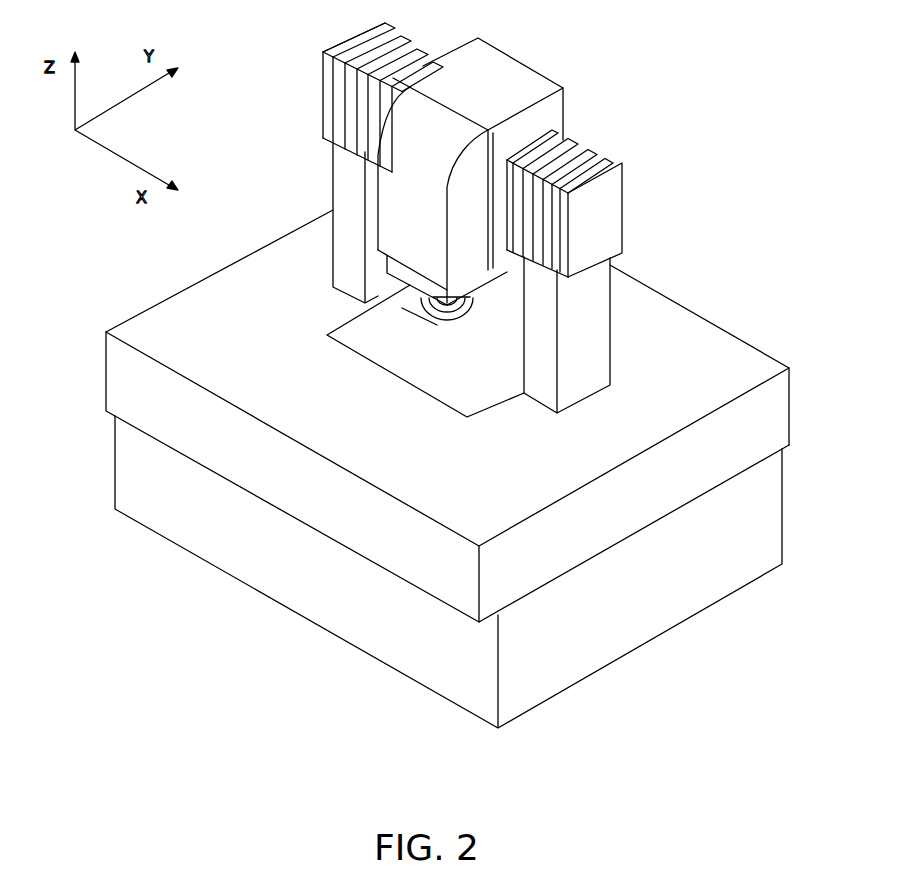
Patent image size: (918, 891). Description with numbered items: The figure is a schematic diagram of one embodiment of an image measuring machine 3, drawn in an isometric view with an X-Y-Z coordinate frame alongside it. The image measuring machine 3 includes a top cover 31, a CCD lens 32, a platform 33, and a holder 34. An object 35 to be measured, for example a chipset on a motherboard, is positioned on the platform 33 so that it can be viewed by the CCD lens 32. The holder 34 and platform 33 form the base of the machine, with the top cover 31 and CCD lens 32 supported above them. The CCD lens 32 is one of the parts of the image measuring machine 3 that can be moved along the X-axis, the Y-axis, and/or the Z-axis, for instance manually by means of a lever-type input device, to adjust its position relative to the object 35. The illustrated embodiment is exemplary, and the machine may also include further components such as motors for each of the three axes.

The image measuring machine 3 is at (405, 218).
The top cover 31 is at (507, 83).
The CCD lens 32 is at (333, 230).
The platform 33 is at (363, 332).
The holder 34 is at (674, 362).
The object 35 is at (487, 315).